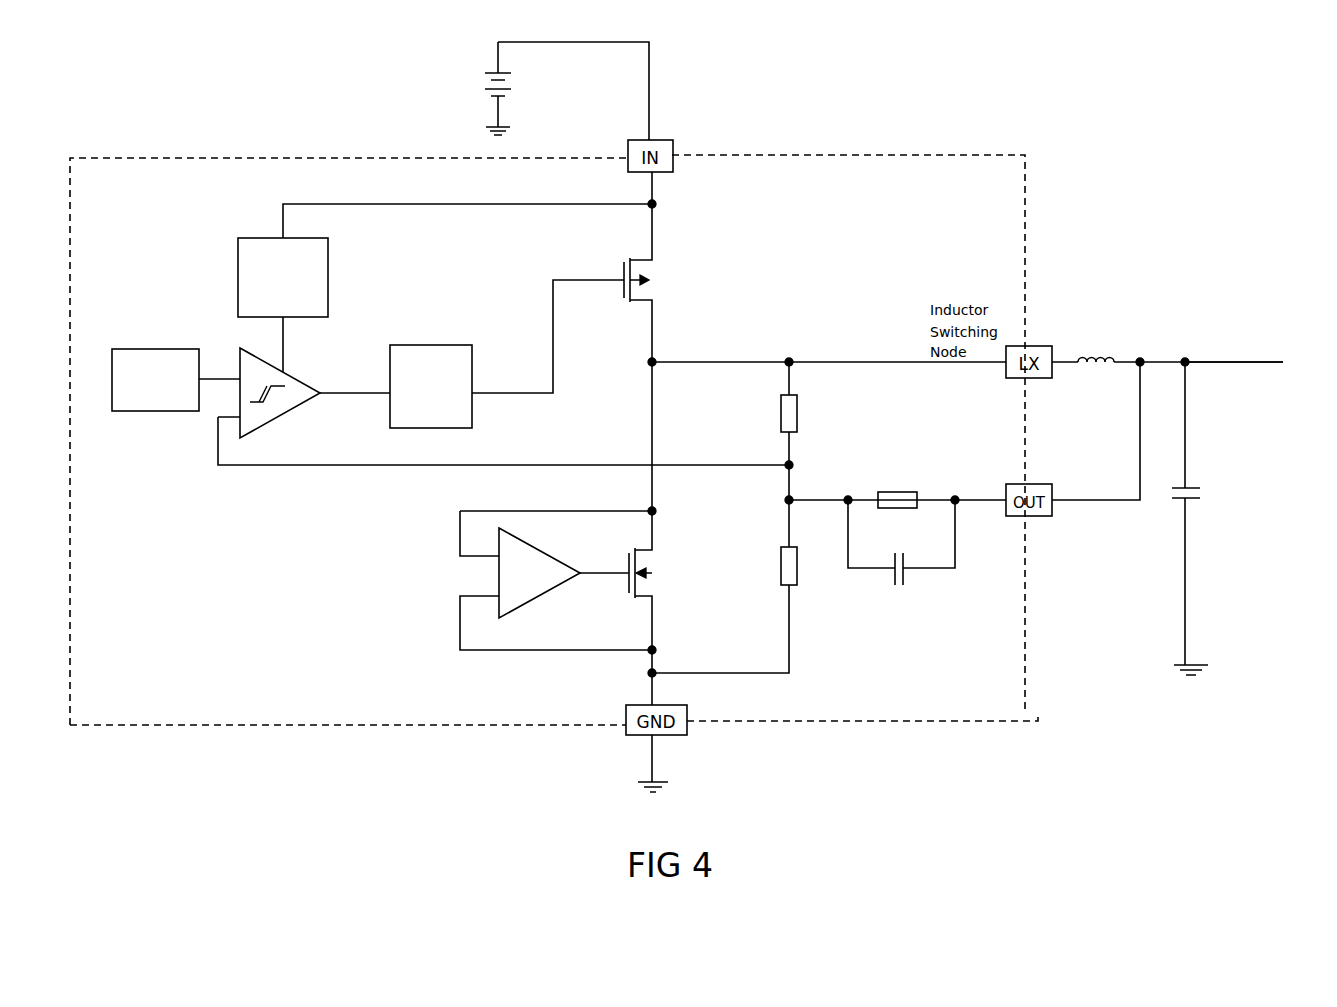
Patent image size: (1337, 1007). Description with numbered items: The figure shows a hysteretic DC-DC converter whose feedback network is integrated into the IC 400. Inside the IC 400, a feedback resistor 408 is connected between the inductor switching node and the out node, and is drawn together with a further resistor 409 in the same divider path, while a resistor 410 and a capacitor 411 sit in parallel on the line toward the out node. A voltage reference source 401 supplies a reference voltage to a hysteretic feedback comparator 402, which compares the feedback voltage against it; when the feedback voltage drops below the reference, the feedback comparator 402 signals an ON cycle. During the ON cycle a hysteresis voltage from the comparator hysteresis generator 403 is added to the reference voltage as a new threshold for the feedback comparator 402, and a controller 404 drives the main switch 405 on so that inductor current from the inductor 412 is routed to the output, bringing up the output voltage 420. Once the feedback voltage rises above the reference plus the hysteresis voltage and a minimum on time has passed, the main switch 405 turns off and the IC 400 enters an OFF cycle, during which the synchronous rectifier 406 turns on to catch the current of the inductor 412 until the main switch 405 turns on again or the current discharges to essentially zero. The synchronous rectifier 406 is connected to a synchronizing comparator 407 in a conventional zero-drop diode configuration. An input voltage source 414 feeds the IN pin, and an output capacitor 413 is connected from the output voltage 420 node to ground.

The IC 400 is at (554, 440).
The voltage reference source 401 is at (176, 369).
The feedback comparator 402 is at (280, 404).
The comparator hysteresis generator 403 is at (303, 277).
The controller 404 is at (431, 375).
The main switch 405 is at (669, 285).
The synchronous rectifier 406 is at (694, 577).
The synchronizing comparator 407 is at (559, 584).
The feedback resistor 408 is at (810, 413).
The feedback divider resistor 409 is at (811, 566).
The resistor 410 is at (900, 486).
The capacitor 411 is at (901, 555).
The inductor 412 is at (1104, 376).
The output capacitor 413 is at (1210, 518).
The input voltage source 414 is at (538, 91).
The output voltage 420 is at (1234, 353).